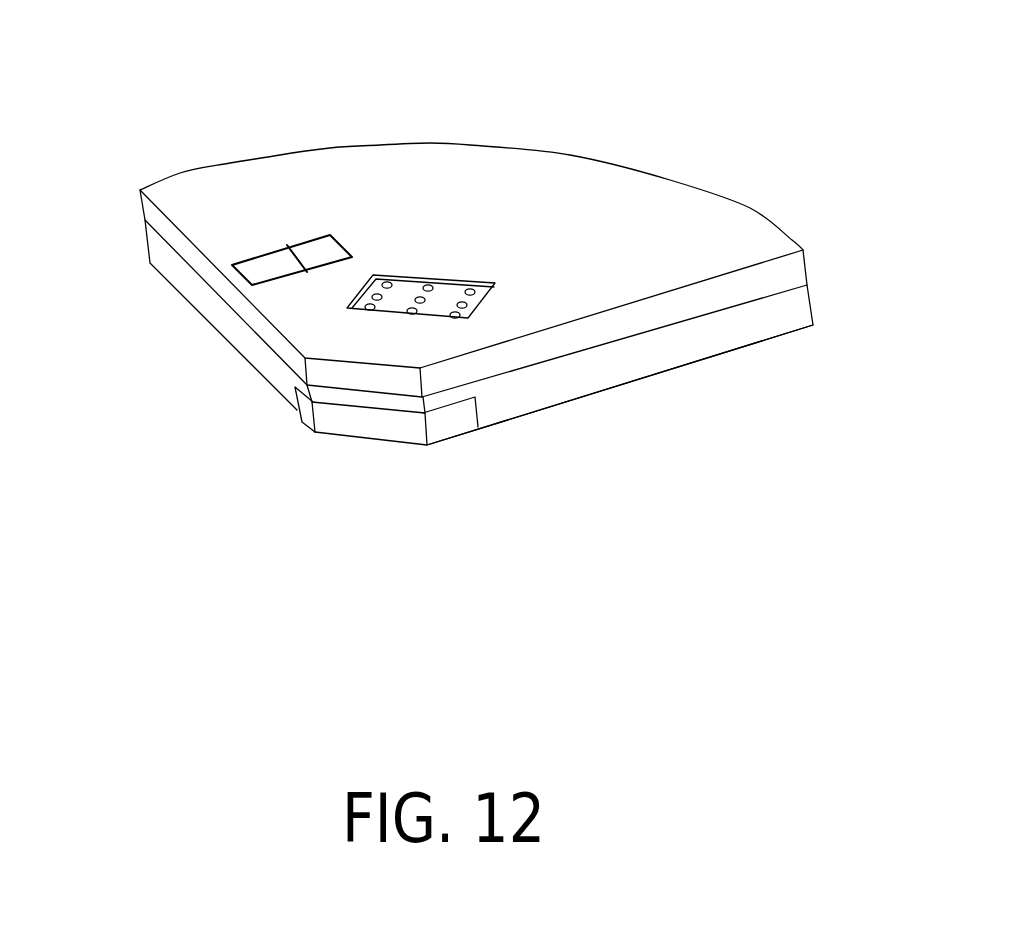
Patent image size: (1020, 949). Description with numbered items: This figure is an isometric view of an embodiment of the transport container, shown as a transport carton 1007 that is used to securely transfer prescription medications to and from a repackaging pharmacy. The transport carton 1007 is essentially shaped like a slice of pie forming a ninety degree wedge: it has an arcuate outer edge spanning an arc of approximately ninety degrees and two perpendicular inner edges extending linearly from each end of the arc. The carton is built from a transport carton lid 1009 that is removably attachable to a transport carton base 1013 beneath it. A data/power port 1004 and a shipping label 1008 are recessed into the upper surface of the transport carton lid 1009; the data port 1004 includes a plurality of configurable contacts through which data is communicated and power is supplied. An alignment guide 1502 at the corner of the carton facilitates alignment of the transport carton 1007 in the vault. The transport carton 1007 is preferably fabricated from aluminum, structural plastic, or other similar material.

The data/power port 1004 is at (450, 280).
The transport carton 1007 is at (542, 430).
The shipping label 1008 is at (250, 277).
The transport carton lid 1009 is at (623, 238).
The transport carton base 1013 is at (727, 330).
The alignment guide 1502 is at (367, 418).